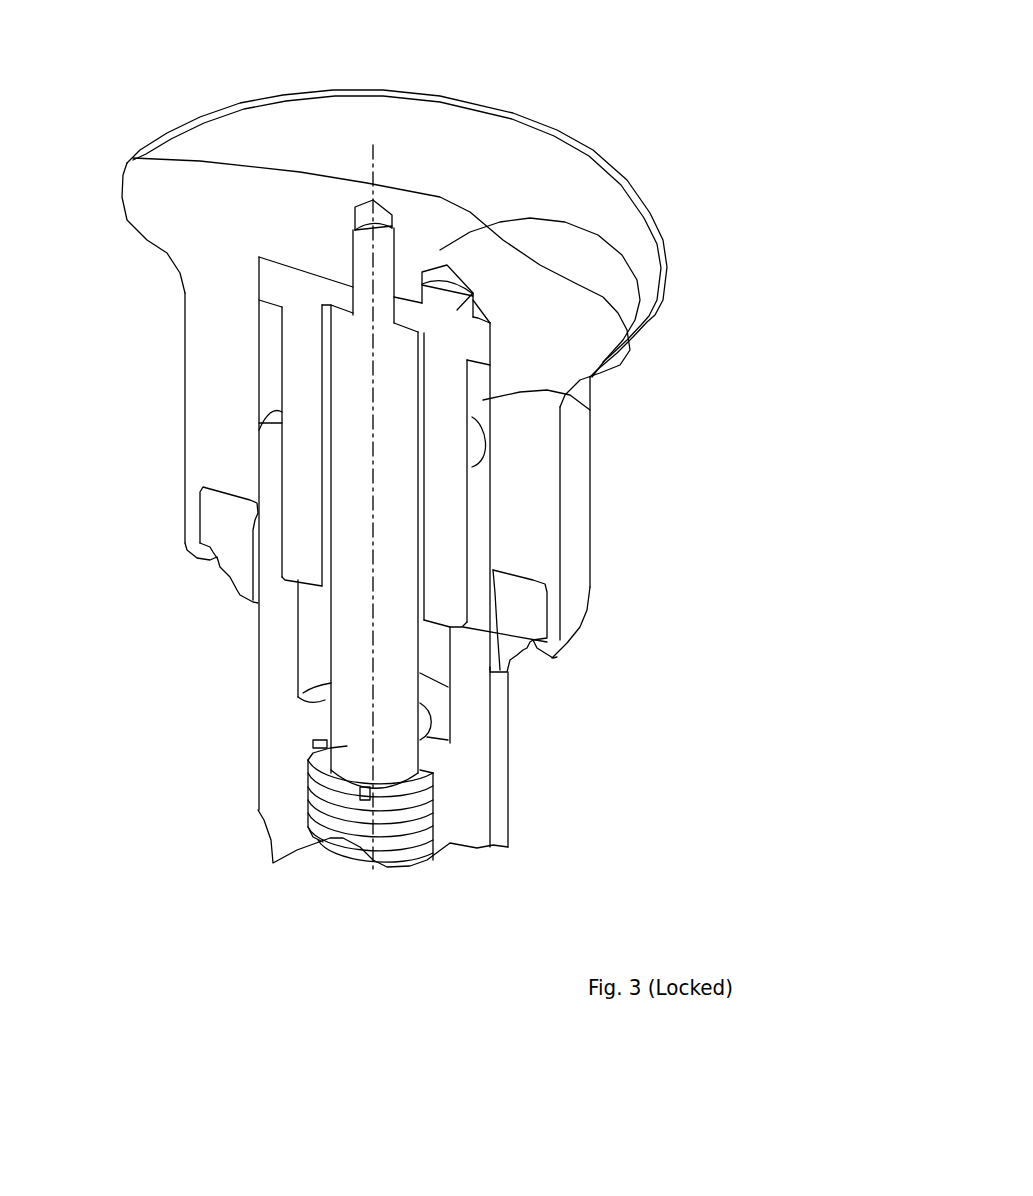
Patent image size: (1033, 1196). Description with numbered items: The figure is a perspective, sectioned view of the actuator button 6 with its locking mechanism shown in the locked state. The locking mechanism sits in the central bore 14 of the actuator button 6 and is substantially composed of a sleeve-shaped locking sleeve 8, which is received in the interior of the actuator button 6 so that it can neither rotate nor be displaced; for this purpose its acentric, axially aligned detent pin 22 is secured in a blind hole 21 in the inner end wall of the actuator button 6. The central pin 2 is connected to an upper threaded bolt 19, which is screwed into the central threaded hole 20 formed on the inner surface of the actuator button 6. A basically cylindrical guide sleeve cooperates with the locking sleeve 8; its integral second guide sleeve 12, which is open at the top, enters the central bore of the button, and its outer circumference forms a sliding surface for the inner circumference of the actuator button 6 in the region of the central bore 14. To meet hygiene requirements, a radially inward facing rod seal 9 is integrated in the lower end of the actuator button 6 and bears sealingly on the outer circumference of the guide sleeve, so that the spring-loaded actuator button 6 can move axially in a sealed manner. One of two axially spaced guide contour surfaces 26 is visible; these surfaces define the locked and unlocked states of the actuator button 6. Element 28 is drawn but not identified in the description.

The pin 2 is at (249, 558).
The actuator button 6 is at (435, 248).
The locking sleeve 8 is at (466, 475).
The rod seal 9 is at (601, 671).
The second guide sleeve 12 is at (403, 513).
The central bore 14 is at (508, 552).
The threaded bolt 19 is at (472, 186).
The central threaded hole 20 is at (326, 189).
The blind hole 21 is at (558, 204).
The detent pin 22 is at (600, 245).
The guide contour surface 26 is at (510, 760).
The spring tube 28 is at (195, 639).